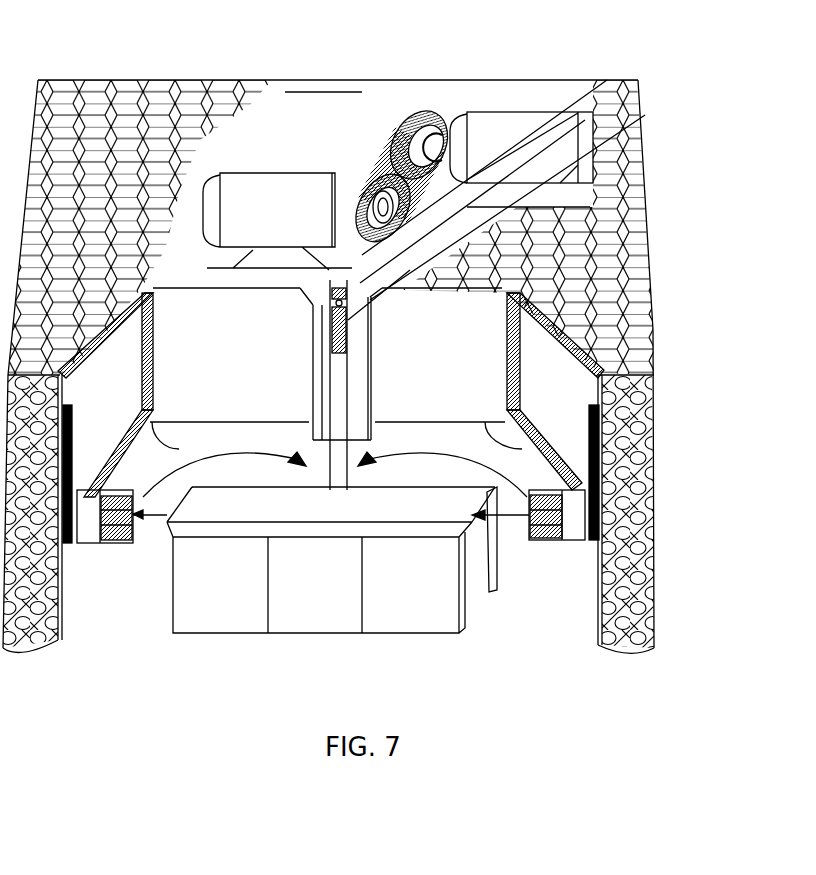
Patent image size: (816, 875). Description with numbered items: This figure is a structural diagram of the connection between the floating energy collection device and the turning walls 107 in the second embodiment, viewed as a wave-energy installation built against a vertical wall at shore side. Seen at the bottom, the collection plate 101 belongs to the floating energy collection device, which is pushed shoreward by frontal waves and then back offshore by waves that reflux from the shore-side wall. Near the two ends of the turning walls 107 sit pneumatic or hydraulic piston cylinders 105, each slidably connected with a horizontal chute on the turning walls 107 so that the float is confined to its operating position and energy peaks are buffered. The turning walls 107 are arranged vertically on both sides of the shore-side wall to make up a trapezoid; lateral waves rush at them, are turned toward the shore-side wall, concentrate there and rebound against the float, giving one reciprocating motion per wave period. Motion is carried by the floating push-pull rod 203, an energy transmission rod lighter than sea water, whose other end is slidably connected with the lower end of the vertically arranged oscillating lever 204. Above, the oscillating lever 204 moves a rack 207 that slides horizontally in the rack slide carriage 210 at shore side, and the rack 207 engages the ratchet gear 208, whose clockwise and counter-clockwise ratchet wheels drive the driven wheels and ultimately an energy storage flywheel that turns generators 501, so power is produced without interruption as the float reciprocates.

The collection plate 101 is at (245, 612).
The pneumatic or hydraulic piston cylinder 105 is at (600, 488).
The turning wall 107 is at (557, 358).
The floating push-pull rod 203 is at (324, 435).
The oscillating lever 204 is at (600, 160).
The rack 207 is at (447, 122).
The ratchet gear 208 is at (403, 125).
The rack slide carriage 210 is at (590, 103).
The generator 501 is at (283, 190).